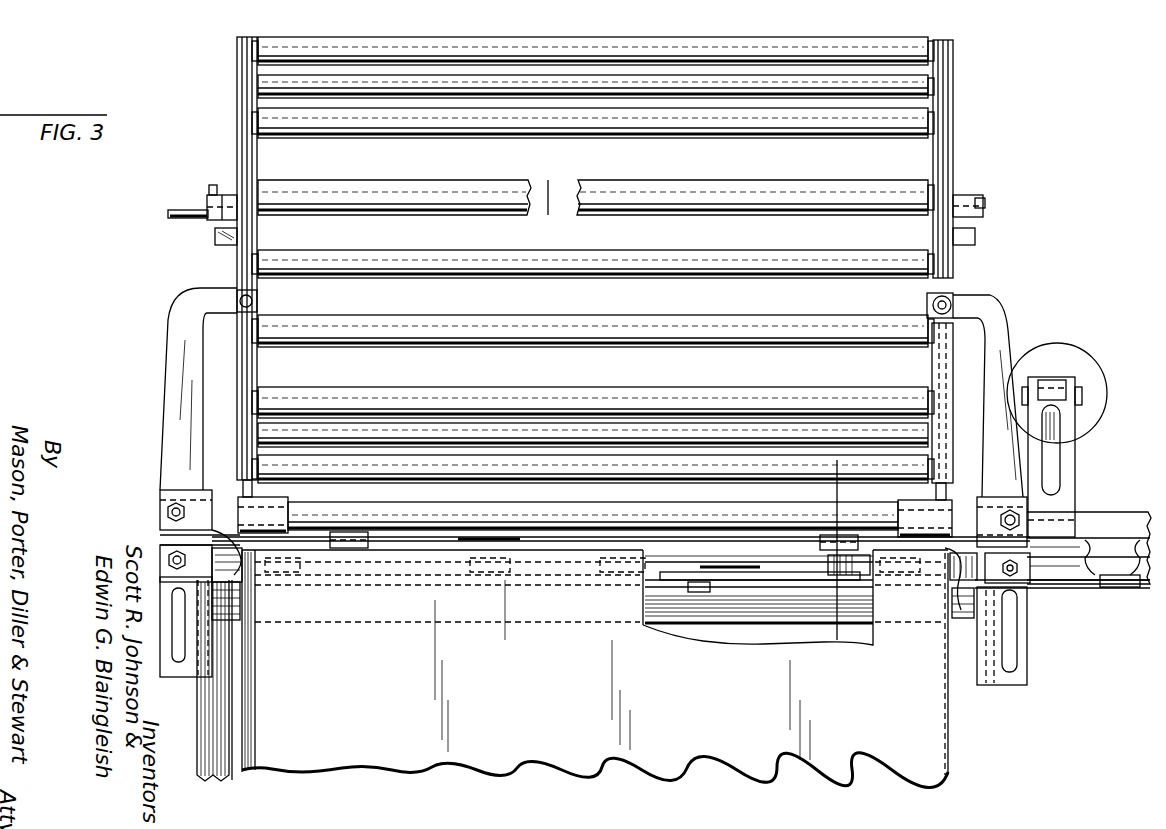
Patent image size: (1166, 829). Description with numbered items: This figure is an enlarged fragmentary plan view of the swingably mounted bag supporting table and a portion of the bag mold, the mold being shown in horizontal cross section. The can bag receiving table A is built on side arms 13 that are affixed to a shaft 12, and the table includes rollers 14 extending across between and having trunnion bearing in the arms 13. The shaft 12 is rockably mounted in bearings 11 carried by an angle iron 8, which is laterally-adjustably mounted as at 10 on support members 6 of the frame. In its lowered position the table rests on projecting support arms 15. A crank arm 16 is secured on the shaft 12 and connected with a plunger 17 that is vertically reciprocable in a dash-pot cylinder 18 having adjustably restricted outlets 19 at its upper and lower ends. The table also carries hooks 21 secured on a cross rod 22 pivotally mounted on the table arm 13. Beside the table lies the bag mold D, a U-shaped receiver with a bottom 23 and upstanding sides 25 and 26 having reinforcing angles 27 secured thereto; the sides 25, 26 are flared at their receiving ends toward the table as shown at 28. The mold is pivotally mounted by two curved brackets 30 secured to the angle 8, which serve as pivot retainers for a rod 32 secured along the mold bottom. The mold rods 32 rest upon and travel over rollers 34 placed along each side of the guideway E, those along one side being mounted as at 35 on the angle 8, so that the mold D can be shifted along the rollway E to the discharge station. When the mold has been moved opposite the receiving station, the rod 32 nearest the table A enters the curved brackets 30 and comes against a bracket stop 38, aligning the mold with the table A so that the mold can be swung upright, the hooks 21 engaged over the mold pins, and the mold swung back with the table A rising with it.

The can bag receiving station or table A is at (234, 62).
The side arms 13 is at (240, 160).
The hooks 21 is at (210, 190).
The adjustably restricted outlets 19 is at (498, 133).
The cross rod 22 is at (549, 204).
The projecting support arms 15 is at (182, 350).
The dash-pot cylinder 18 is at (1070, 347).
The plunger 17 is at (1062, 381).
The crank arm 16 is at (1072, 466).
The bearings 11 is at (165, 492).
The rollers 14 is at (877, 345).
The support members 6 is at (835, 470).
The flared receiving ends 28 is at (190, 528).
The bracket stop 38 is at (200, 552).
The reinforcing angles 27 is at (238, 606).
The curved brackets 30 is at (350, 547).
The shaft 12 is at (560, 531).
The slideway or rollway E is at (625, 560).
The roller mounting 35 is at (690, 592).
The rod 32 is at (742, 575).
The angle iron 8 is at (757, 581).
The upstanding side 25 is at (245, 676).
The lateral adjustable mounting 10 is at (178, 662).
The upstanding side 26 is at (944, 718).
The bag mold D is at (952, 748).
The bottom 23 is at (706, 764).
The rollers 34 is at (1116, 560).